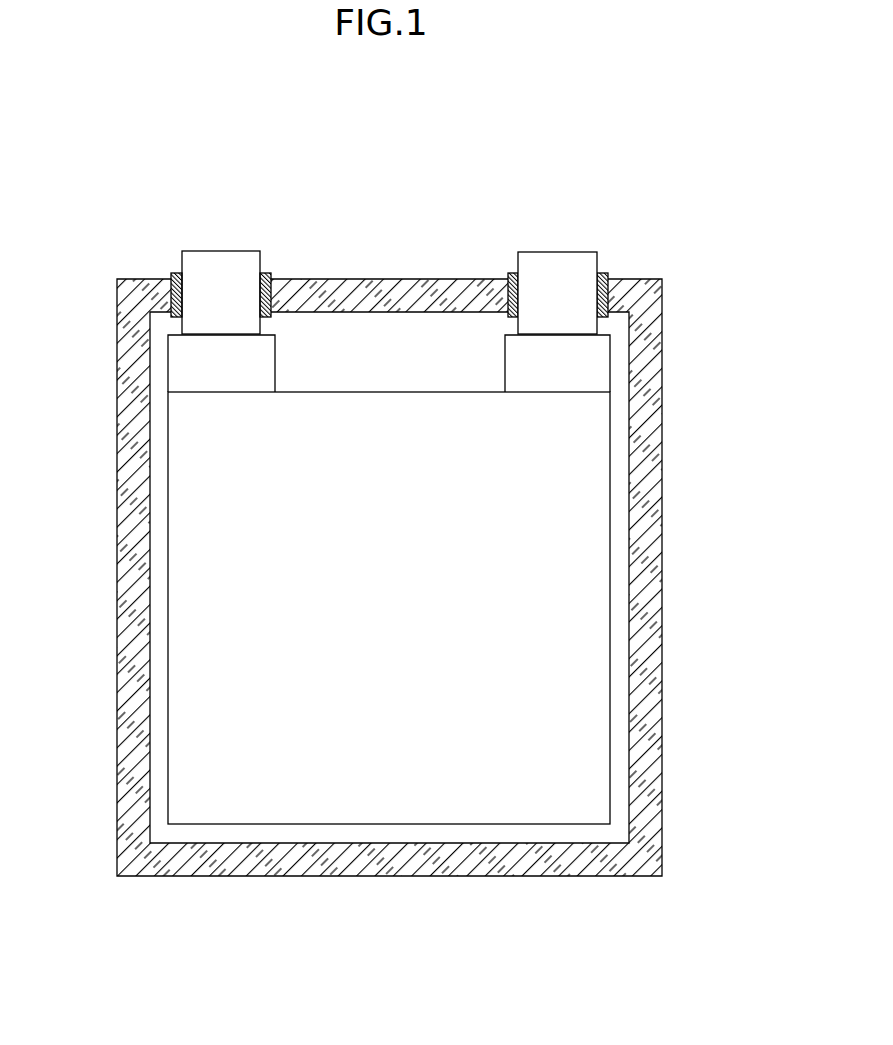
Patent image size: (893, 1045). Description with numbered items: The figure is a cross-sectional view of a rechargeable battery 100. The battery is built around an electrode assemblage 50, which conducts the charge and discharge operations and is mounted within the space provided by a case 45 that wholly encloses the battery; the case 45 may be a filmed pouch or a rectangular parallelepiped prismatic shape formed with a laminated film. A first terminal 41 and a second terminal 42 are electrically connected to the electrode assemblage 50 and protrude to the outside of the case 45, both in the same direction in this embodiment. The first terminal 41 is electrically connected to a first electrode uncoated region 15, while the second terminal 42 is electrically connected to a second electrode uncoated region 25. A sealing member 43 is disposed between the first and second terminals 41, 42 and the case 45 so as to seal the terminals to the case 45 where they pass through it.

The rechargeable battery 100 is at (382, 138).
The first electrode uncoated region 15 is at (188, 371).
The second electrode uncoated region 25 is at (588, 363).
The first terminal 41 is at (222, 267).
The second terminal 42 is at (561, 268).
The sealing member 43 is at (265, 273).
The case 45 is at (648, 532).
The electrode assemblage 50 is at (622, 478).